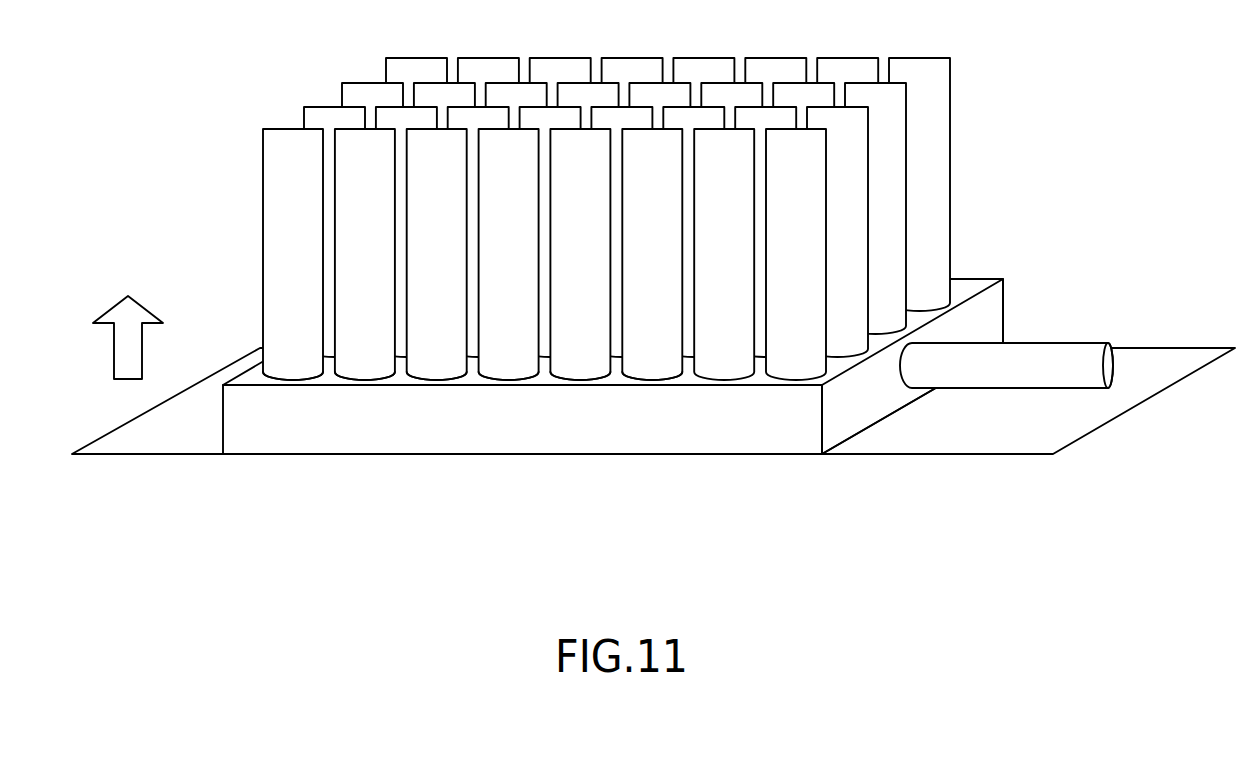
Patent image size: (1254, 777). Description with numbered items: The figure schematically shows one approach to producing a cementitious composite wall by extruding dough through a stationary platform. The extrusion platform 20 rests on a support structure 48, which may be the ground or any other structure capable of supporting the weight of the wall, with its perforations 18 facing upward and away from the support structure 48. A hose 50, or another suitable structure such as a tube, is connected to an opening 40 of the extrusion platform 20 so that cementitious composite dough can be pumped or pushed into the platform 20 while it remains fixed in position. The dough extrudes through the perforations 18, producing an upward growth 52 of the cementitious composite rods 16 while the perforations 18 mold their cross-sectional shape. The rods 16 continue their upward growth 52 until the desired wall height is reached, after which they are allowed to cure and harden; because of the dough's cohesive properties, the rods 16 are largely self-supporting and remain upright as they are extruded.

The cementitious composite rods 16 is at (287, 192).
The perforations 18 is at (445, 380).
The extrusion platform 20 is at (343, 430).
The opening 40 is at (900, 373).
The support structure 48 is at (955, 435).
The hose 50 is at (1018, 358).
The upward growth 52 is at (114, 350).